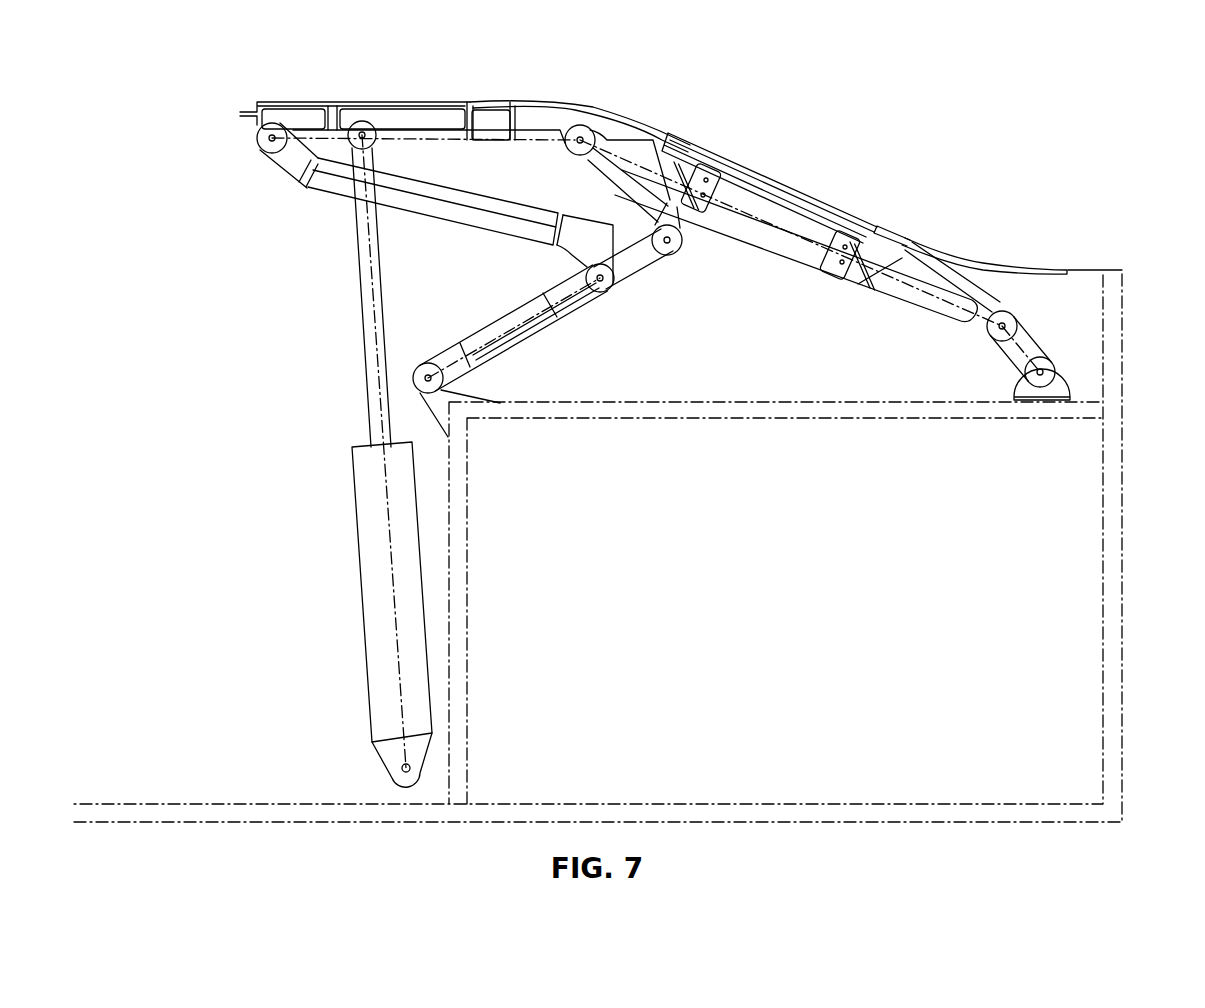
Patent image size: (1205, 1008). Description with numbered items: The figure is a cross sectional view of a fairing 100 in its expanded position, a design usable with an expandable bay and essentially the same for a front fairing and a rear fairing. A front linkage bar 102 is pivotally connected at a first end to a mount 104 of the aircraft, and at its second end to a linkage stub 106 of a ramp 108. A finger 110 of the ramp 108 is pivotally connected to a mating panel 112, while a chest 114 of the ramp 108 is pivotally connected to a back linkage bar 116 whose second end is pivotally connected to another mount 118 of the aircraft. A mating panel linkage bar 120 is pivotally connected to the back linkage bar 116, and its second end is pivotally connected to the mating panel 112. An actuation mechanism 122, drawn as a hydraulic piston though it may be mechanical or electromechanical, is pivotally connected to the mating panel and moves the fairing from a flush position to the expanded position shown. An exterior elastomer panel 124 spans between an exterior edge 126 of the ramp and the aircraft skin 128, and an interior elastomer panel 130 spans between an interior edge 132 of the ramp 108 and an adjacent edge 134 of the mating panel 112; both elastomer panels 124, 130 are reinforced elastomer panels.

The fairing 100 is at (584, 42).
The front linkage bar 102 is at (1028, 340).
The mount 104 is at (1030, 392).
The linkage stub 106 is at (990, 333).
The ramp 108 is at (765, 195).
The finger 110 is at (595, 158).
The mating panel 112 is at (385, 112).
The chest 114 is at (681, 266).
The back linkage bar 116 is at (535, 330).
The mount 118 is at (467, 397).
The mating panel linkage bar 120 is at (415, 195).
The actuation mechanism 122 is at (410, 577).
The exterior elastomer panel 124 is at (980, 262).
The exterior edge 126 is at (873, 228).
The aircraft skin 128 is at (1112, 270).
The interior elastomer panel 130 is at (592, 107).
The interior edge 132 is at (705, 150).
The adjacent edge 134 is at (467, 110).